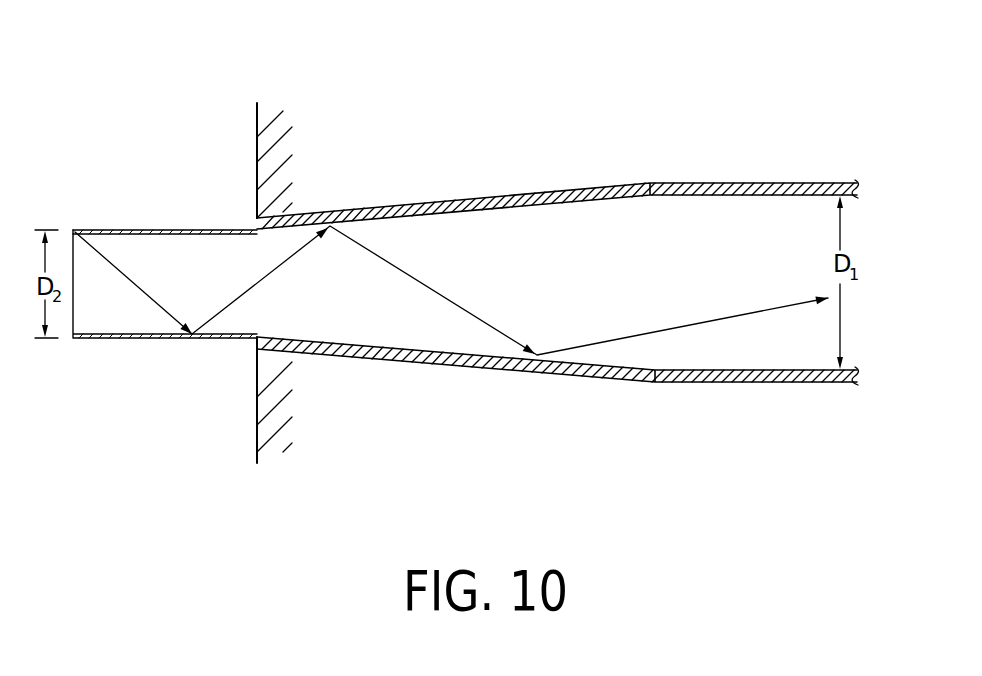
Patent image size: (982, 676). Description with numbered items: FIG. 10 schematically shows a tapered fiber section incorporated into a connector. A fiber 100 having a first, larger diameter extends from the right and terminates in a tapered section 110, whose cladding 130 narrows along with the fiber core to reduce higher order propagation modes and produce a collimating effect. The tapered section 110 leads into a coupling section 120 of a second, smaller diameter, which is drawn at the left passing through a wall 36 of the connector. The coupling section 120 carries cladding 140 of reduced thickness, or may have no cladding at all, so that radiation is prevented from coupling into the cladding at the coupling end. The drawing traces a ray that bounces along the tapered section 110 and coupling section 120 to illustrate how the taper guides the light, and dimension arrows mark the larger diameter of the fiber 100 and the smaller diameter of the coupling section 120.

The wall 36 is at (257, 128).
The fiber 100 is at (558, 278).
The tapered section 110 is at (503, 388).
The coupling section 120 is at (165, 298).
The cladding 130 is at (480, 200).
The cladding of reduced thickness 140 is at (138, 228).